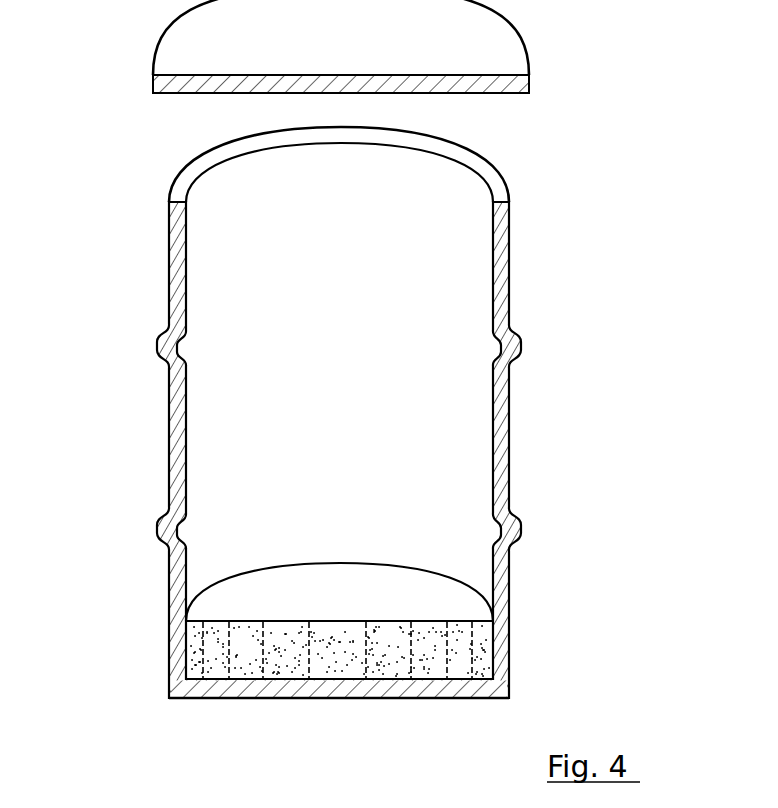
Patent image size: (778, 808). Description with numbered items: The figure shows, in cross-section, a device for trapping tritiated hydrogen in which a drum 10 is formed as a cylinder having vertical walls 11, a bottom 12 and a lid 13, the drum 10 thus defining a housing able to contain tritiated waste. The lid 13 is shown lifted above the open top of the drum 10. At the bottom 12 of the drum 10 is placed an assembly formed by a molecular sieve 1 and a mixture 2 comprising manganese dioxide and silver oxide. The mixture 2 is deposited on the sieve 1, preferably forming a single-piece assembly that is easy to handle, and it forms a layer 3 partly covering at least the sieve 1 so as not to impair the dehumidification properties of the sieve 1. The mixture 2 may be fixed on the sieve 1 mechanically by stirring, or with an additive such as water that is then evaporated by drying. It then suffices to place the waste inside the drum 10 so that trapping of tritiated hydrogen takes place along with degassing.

The molecular sieve 1 is at (478, 647).
The mixture 2 is at (372, 611).
The layer 3 is at (222, 621).
The drum 10 is at (331, 458).
The vertical walls 11 is at (506, 390).
The bottom 12 is at (320, 691).
The lid 13 is at (503, 83).